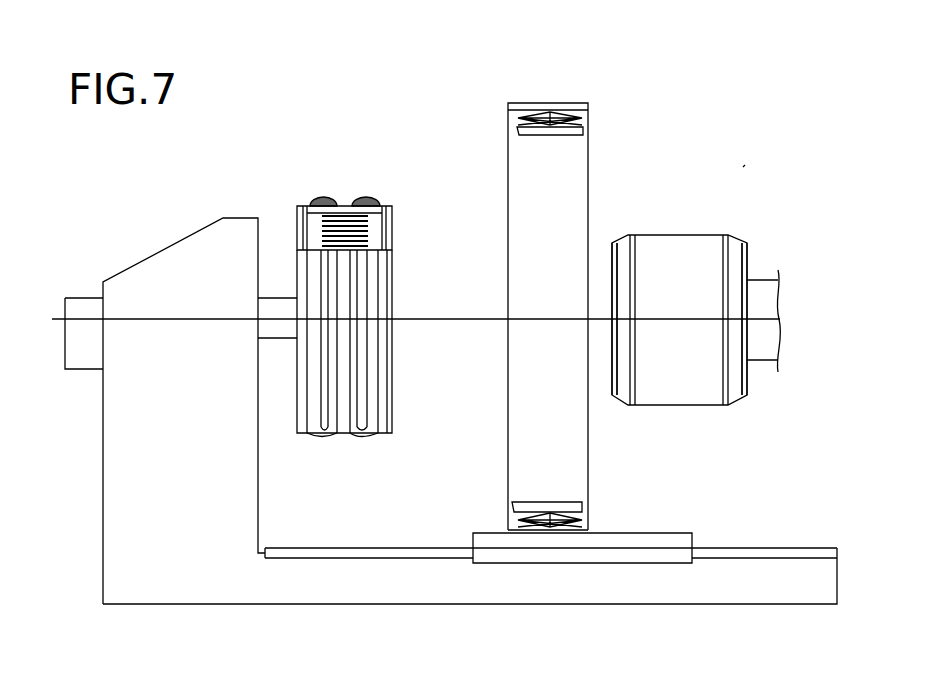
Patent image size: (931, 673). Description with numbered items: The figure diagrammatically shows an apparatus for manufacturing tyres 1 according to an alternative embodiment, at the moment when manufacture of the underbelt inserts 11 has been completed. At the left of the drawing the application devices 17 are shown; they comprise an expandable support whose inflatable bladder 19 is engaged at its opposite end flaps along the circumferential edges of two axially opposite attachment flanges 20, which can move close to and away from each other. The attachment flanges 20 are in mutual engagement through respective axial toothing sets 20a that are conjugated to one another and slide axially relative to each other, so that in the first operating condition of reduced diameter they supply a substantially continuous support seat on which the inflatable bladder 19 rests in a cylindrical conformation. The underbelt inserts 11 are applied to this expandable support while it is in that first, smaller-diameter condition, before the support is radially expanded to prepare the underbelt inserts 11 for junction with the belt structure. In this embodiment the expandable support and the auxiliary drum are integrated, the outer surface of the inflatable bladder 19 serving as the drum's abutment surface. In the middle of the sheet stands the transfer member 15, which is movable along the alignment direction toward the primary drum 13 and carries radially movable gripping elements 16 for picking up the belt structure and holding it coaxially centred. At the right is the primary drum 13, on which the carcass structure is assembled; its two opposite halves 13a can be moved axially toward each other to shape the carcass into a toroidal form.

The apparatus for manufacturing tyres 1 is at (743, 167).
The underbelt insert 11 is at (325, 203).
The primary drum 13 is at (752, 222).
The half of the primary drum 13a is at (628, 257).
The transfer member 15 is at (605, 112).
The gripping elements 16 is at (520, 130).
The application devices 17 is at (402, 295).
The inflatable bladder 19 is at (341, 212).
The attachment flanges 20 is at (313, 242).
The axial toothing sets 20a is at (327, 227).